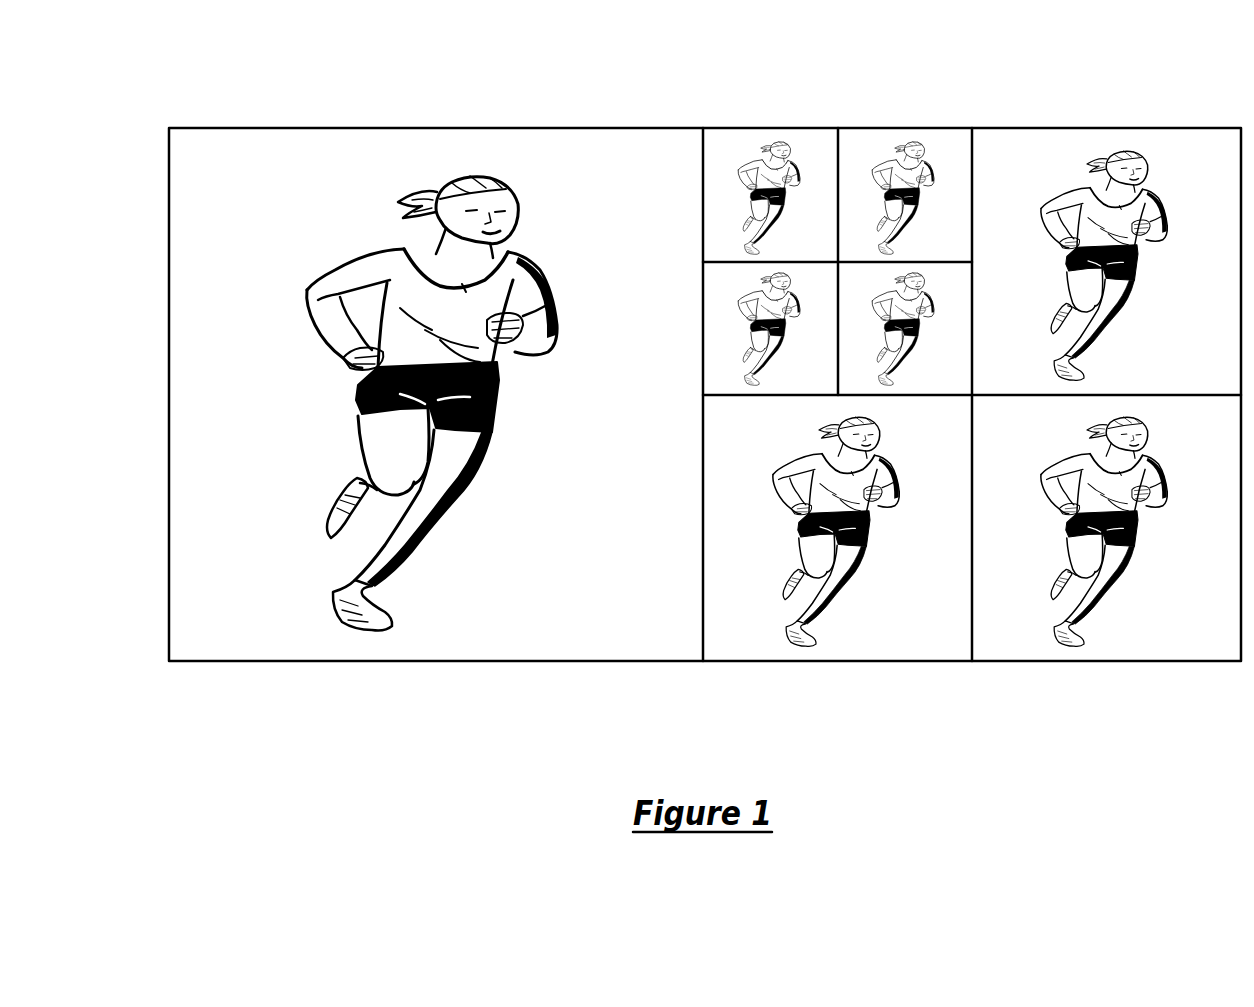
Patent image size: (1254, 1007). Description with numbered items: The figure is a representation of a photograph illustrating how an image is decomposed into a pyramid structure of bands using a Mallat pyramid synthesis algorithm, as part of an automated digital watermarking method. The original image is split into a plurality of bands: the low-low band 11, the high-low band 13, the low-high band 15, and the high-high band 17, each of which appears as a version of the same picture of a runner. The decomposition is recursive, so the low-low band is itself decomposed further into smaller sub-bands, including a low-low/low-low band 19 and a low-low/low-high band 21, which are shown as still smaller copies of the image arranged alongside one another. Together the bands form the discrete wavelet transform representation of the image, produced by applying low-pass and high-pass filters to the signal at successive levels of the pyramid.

The low-low band 11 is at (726, 118).
The high-low band 13 is at (837, 662).
The low-high band 15 is at (1130, 128).
The high-high band 17 is at (1110, 662).
The low-low/low-low band 19 is at (781, 128).
The low-low/low-high band 21 is at (916, 128).